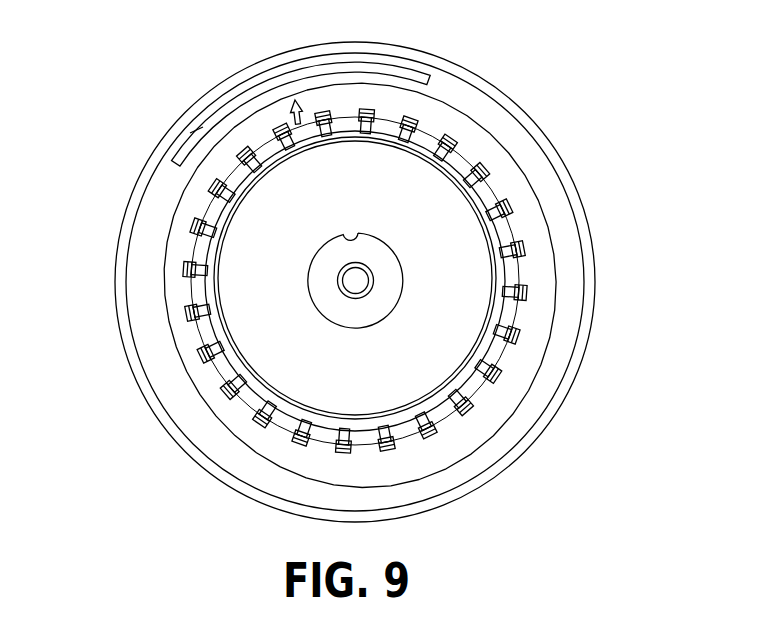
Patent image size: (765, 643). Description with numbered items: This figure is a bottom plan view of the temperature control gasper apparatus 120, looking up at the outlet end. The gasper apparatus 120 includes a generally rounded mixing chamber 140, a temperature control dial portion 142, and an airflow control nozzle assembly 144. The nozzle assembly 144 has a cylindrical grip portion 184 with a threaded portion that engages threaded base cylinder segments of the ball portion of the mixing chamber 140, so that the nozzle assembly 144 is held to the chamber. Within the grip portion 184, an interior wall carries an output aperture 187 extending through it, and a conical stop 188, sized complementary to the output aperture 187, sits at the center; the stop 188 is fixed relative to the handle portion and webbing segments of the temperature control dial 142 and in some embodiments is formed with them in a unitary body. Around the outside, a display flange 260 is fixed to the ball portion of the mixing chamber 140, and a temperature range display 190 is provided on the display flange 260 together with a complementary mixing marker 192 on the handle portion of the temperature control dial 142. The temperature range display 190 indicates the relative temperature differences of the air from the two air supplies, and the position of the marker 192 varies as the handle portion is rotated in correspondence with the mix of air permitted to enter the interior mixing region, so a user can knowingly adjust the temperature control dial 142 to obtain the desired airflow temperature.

The gasper apparatus 120 is at (131, 119).
The mixing chamber 140 is at (503, 77).
The temperature control dial portion 142 is at (560, 335).
The airflow control nozzle assembly 144 is at (455, 430).
The cylindrical grip portion 184 is at (203, 252).
The output aperture 187 is at (354, 236).
The conical stop 188 is at (360, 283).
The temperature range display 190 is at (438, 80).
The mixing marker 192 is at (302, 111).
The display flange 260 is at (532, 160).